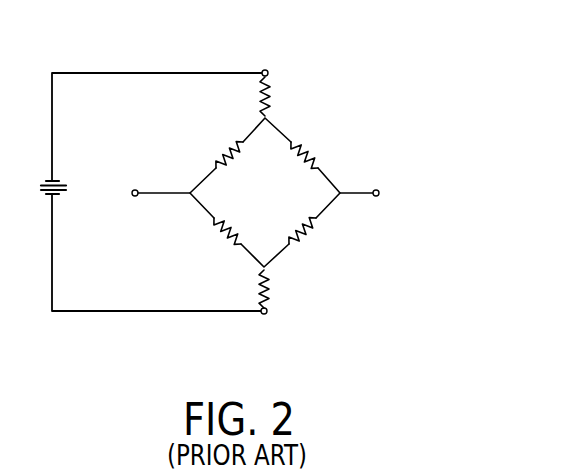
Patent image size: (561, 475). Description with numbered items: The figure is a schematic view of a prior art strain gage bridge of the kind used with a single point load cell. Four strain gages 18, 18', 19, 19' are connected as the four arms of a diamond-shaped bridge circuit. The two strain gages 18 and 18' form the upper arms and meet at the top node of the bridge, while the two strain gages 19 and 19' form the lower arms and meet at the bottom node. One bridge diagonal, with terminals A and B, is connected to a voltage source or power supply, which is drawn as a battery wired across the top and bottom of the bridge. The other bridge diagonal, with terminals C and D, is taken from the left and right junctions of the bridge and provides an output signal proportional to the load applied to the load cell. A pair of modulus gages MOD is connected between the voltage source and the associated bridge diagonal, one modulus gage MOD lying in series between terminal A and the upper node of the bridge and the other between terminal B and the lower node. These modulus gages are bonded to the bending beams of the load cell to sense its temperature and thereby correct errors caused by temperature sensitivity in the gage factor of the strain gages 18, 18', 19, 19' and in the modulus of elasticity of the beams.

The modulus gage MOD is at (275, 92).
The strain gage 18 is at (217, 130).
The strain gage 18' is at (315, 130).
The strain gage 19 is at (195, 240).
The strain gage 19' is at (339, 240).
The terminal A is at (265, 70).
The terminal B is at (264, 314).
The terminal C is at (135, 190).
The terminal D is at (376, 190).